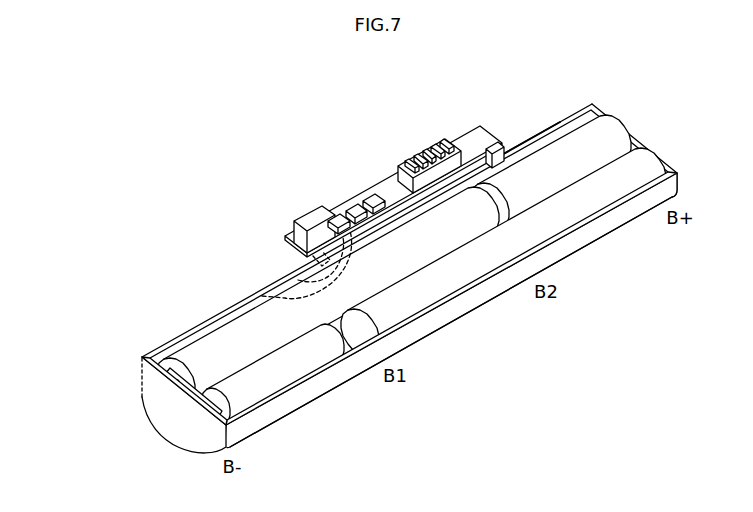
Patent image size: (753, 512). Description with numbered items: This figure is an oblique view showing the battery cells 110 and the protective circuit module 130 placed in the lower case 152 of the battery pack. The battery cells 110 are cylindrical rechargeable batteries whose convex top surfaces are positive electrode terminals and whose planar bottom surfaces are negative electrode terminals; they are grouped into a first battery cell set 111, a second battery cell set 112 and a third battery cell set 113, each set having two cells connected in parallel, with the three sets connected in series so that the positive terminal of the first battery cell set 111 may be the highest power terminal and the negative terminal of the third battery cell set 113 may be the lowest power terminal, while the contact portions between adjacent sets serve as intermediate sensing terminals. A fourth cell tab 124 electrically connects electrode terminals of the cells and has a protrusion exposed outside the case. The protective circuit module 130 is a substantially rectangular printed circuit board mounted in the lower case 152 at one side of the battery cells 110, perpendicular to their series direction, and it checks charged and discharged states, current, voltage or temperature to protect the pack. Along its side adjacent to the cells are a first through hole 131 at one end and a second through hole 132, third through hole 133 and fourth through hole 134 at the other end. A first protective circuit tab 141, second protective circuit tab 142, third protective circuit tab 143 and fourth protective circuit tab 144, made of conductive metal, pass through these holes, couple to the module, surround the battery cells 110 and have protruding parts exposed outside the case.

The battery cell 110 is at (612, 130).
The first battery cell set 111 is at (607, 247).
The second battery cell set 112 is at (463, 327).
The third battery cell set 113 is at (300, 413).
The fourth cell tab 124 is at (170, 386).
The protective circuit module 130 is at (468, 134).
The first through hole 131 is at (510, 140).
The second through hole 132 is at (383, 193).
The third through hole 133 is at (363, 208).
The fourth through hole 134 is at (340, 226).
The first protective circuit tab 141 is at (527, 141).
The second protective circuit tab 142 is at (297, 303).
The third protective circuit tab 143 is at (323, 297).
The fourth protective circuit tab 144 is at (313, 256).
The lower case 152 is at (191, 428).